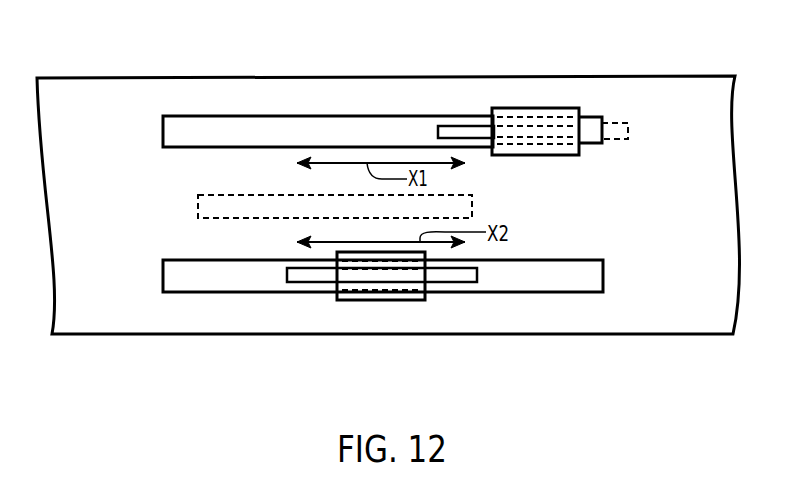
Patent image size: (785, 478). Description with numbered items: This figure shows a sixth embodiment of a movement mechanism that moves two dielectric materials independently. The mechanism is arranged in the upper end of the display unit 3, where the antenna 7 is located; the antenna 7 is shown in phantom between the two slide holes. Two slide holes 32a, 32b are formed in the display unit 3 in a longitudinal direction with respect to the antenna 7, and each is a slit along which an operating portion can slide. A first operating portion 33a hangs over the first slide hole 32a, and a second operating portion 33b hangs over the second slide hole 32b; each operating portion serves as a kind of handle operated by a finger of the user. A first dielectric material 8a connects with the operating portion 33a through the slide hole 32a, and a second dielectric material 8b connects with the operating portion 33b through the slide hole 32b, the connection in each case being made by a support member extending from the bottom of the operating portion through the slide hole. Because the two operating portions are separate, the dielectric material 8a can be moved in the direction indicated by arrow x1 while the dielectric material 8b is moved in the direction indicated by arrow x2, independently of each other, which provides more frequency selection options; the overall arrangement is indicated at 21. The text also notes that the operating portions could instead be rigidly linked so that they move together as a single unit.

The display unit 3 is at (112, 77).
The antenna 7 is at (196, 208).
The dielectric material 8a is at (457, 127).
The dielectric material 8b is at (453, 283).
The assembly 21 is at (430, 108).
The slide hole 32a is at (222, 115).
The slide hole 32b is at (162, 276).
The operating portion 33a is at (525, 107).
The operating portion 33b is at (360, 301).